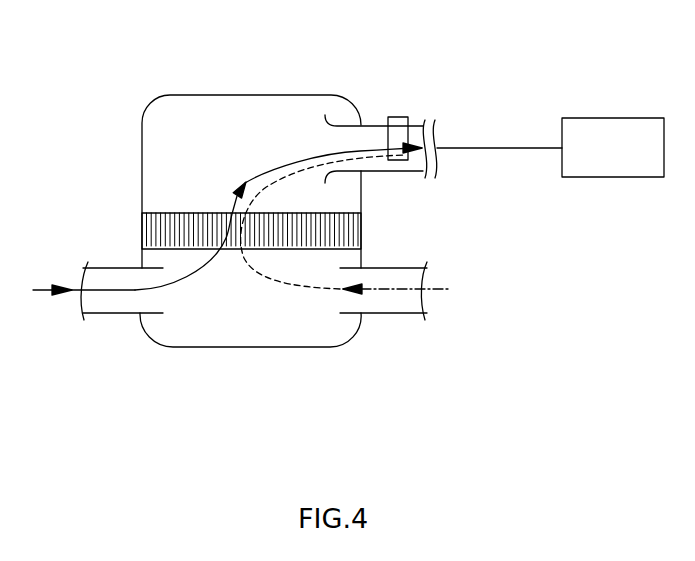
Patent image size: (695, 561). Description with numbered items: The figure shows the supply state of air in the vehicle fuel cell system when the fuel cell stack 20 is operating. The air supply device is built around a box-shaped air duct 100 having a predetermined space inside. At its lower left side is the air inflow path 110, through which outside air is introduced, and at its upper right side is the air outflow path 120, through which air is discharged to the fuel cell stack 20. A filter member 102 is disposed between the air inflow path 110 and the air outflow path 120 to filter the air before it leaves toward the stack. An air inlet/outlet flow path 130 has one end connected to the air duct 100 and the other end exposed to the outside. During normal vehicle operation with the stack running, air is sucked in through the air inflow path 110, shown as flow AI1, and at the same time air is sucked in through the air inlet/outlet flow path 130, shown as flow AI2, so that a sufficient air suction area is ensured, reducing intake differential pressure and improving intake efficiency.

The fuel cell stack 20 is at (610, 118).
The air duct 100 is at (260, 347).
The filter member 102 is at (180, 213).
The air inflow path 110 is at (120, 315).
The air outflow path 120 is at (373, 128).
The air inlet/outlet flow path 130 is at (382, 313).
The air sucked through the air inflow path AI1 is at (182, 281).
The air sucked through the air inlet/outlet flow path AI2 is at (315, 290).